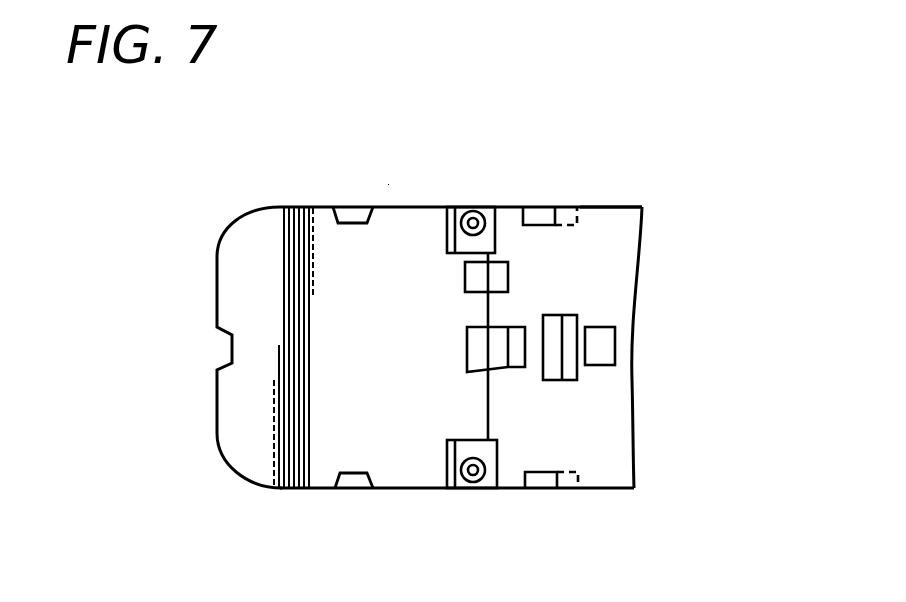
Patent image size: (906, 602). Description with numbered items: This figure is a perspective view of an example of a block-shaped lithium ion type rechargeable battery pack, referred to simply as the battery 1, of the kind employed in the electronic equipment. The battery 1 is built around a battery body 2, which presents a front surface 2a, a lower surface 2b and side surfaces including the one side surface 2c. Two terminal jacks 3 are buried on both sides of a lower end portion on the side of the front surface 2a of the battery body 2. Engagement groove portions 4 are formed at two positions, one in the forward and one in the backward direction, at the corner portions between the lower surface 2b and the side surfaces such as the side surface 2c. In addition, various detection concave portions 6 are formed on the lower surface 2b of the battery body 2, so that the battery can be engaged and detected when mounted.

The battery 1 is at (389, 175).
The battery body 2 is at (293, 490).
The front surface 2a is at (275, 383).
The lower surface 2b is at (615, 283).
The side surface 2c is at (601, 207).
The terminal jack 3 is at (472, 207).
The engagement groove portion 4 is at (542, 215).
The detection concave portion 6 is at (490, 360).